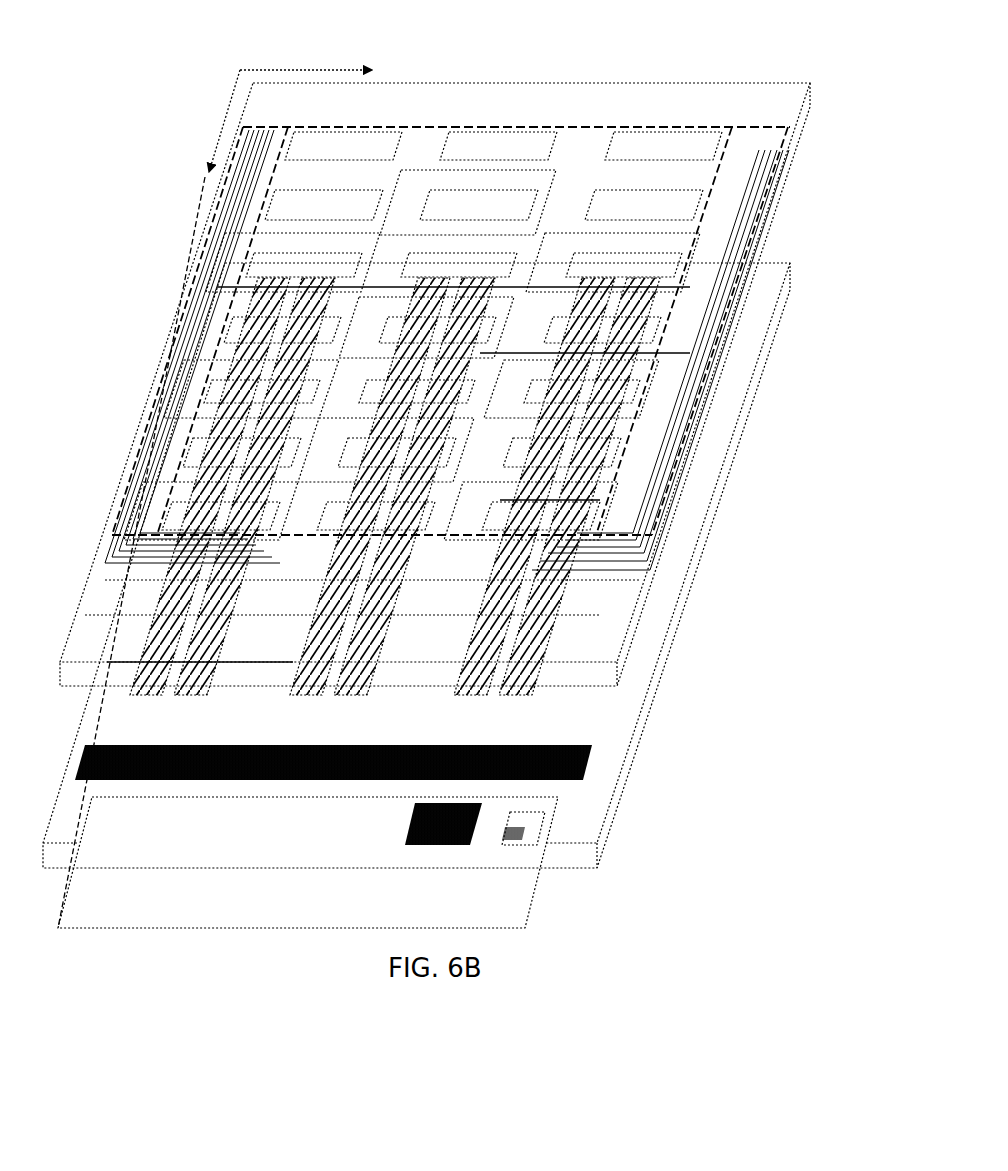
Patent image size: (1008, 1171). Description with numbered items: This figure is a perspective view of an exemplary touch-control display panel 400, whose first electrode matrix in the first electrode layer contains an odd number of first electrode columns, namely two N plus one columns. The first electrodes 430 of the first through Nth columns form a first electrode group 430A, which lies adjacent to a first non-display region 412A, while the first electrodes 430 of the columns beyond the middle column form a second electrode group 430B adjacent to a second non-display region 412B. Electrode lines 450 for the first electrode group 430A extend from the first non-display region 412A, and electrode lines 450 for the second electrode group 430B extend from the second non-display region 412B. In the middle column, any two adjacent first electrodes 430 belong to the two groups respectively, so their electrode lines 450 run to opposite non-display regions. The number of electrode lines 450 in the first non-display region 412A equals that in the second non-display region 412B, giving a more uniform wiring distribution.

The touch-control display panel 400 is at (283, 58).
The first non-display region 412A is at (226, 178).
The second non-display region 412B is at (770, 130).
The first electrodes 430 is at (480, 147).
The first electrode group 430A is at (374, 127).
The second electrode group 430B is at (687, 130).
The electrode lines 450 is at (200, 262).